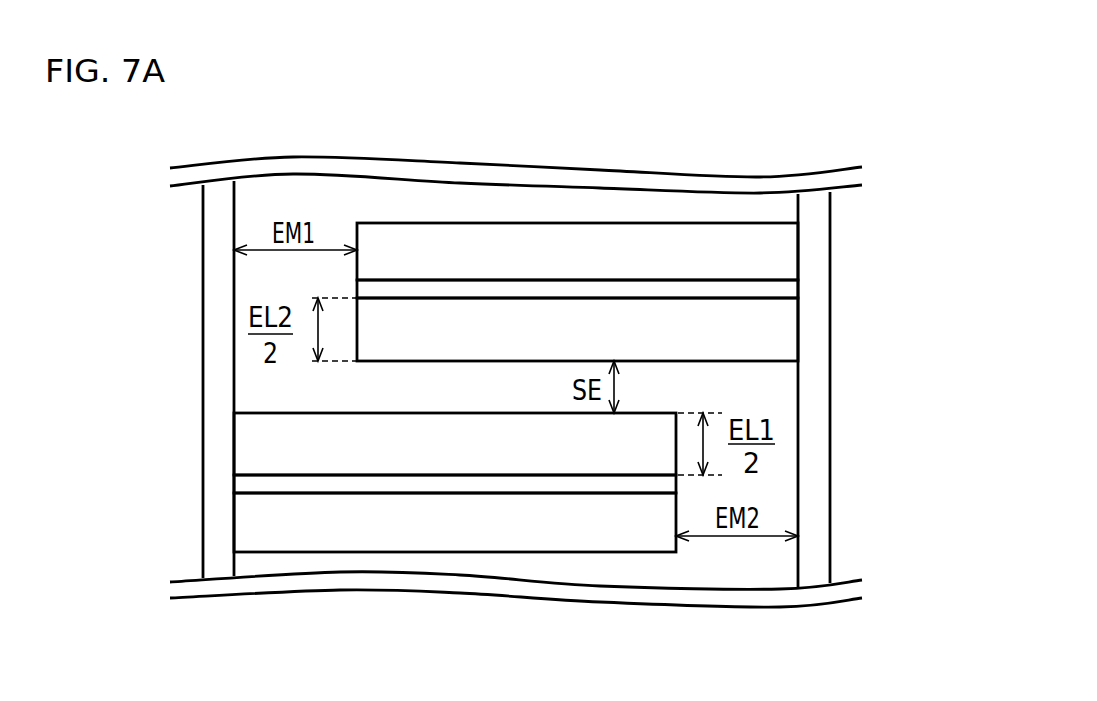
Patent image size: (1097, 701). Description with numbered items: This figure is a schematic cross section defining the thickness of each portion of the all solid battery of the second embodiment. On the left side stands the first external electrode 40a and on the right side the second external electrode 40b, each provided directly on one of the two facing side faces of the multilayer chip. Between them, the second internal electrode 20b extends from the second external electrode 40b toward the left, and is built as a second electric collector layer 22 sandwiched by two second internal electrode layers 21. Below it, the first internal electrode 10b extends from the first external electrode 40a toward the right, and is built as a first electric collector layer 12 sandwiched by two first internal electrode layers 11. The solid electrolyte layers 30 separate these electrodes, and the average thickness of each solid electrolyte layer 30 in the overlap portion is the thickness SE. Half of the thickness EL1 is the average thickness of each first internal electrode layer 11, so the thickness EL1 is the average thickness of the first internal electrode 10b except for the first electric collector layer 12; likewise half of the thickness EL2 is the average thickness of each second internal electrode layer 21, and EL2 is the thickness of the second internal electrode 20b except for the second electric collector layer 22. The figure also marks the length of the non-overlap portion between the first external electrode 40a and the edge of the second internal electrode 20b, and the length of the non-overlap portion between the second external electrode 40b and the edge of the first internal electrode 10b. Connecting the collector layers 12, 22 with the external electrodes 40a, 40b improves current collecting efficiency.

The solid electrolyte layer 30 is at (500, 397).
The first external electrode 40a is at (203, 288).
The second external electrode 40b is at (830, 429).
The second internal electrode 20b is at (658, 292).
The second internal electrode layer 21 is at (782, 250).
The second electric collector layer 22 is at (783, 290).
The first internal electrode 10b is at (365, 482).
The first internal electrode layer 11 is at (250, 445).
The first electric collector layer 12 is at (247, 483).